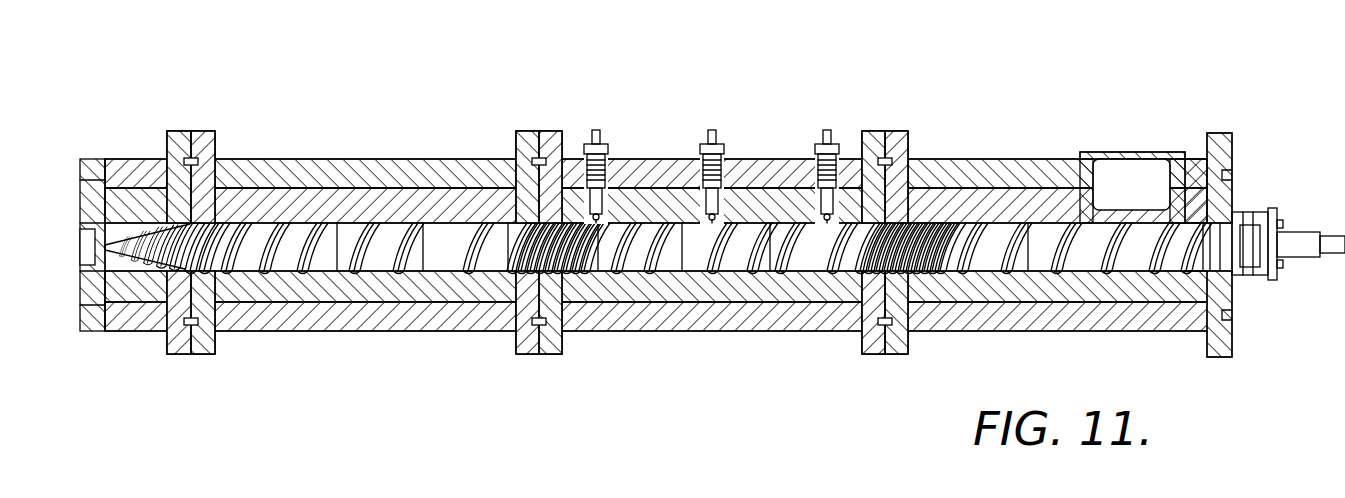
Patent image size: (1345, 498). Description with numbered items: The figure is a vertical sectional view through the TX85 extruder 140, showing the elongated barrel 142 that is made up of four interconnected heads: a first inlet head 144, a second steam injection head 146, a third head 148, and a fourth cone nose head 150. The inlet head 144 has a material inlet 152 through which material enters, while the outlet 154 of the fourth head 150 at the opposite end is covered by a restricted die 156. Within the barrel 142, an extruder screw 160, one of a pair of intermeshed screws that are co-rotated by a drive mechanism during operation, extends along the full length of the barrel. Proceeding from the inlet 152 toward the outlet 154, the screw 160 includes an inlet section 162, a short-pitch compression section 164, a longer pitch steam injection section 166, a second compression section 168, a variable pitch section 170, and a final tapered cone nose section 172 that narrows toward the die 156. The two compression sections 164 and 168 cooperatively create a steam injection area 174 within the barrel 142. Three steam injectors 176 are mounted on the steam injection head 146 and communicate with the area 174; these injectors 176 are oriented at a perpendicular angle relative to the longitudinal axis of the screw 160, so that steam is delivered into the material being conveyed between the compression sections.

The extruder 140 is at (1050, 114).
The barrel 142 is at (400, 159).
The first inlet head 144 is at (950, 159).
The second steam injection head 146 is at (780, 188).
The third head 148 is at (285, 159).
The fourth cone nose head 150 is at (160, 159).
The material inlet 152 is at (1140, 158).
The outlet 154 is at (132, 262).
The restricted die 156 is at (90, 159).
The extruder screw 160 is at (420, 276).
The inlet section 162 is at (1088, 271).
The short-pitch compression section 164 is at (920, 271).
The longer pitch steam injection section 166 is at (778, 271).
The second compression section 168 is at (588, 271).
The variable pitch section 170 is at (363, 252).
The tapered cone nose section 172 is at (168, 262).
The steam injection area 174 is at (683, 271).
The steam injectors 176 is at (590, 147).